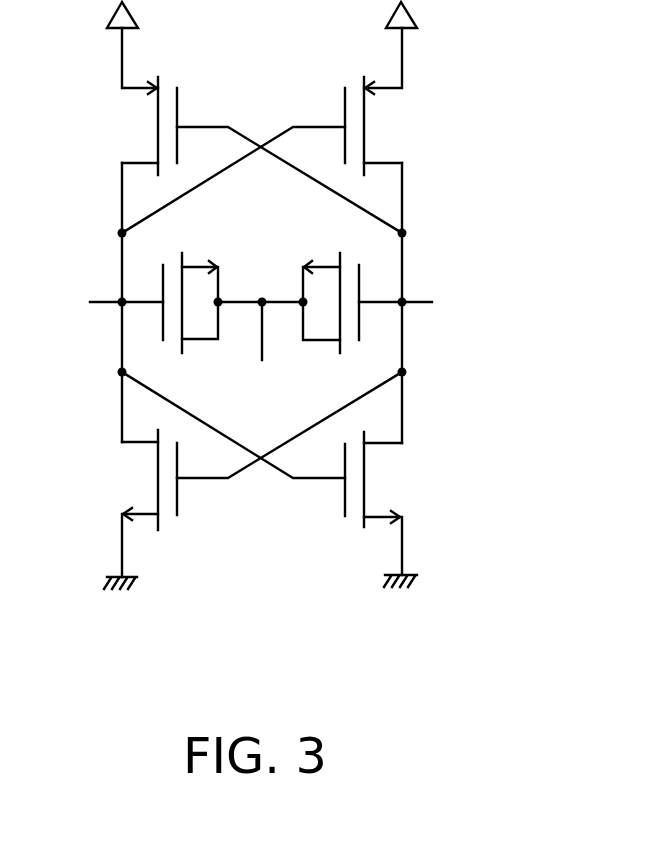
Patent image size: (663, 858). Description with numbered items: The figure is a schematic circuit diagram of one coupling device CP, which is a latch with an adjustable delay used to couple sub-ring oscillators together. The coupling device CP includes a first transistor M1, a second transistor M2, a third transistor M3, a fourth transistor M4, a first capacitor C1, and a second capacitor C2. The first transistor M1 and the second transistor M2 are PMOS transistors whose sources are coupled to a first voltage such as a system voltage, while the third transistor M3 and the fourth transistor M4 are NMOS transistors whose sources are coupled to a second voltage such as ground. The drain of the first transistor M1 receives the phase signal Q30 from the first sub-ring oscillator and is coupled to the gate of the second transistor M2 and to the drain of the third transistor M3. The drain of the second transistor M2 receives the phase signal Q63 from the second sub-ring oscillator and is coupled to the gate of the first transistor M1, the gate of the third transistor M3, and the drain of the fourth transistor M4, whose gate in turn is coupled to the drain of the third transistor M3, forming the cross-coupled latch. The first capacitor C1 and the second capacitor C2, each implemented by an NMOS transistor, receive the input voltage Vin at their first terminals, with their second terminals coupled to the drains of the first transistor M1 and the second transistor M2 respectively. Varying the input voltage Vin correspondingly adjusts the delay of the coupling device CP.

The first transistor M1 is at (135, 130).
The second transistor M2 is at (387, 131).
The third transistor M3 is at (135, 475).
The fourth transistor M4 is at (387, 475).
The first capacitor C1 is at (172, 267).
The second capacitor C2 is at (350, 268).
The input voltage Vin is at (260, 350).
The phase signal Q30 is at (82, 304).
The phase signal Q63 is at (441, 304).
The coupling device CP is at (573, 640).